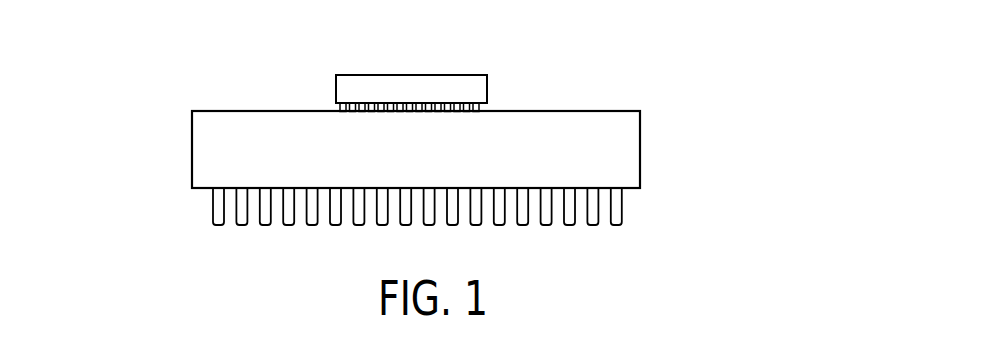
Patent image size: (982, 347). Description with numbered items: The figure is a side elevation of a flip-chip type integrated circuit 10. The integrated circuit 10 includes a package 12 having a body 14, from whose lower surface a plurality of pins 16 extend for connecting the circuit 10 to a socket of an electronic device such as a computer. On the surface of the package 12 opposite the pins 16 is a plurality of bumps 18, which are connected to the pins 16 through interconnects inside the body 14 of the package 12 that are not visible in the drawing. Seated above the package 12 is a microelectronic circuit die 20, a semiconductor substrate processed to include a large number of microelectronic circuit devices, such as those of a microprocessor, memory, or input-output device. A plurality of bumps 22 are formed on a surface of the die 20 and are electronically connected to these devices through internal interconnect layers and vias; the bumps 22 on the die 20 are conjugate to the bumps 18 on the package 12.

The integrated circuit 10 is at (166, 60).
The package 12 is at (664, 148).
The body 14 is at (192, 150).
The pins 16 is at (649, 209).
The bumps 18 is at (500, 101).
The microelectronic circuit die 20 is at (470, 75).
The bumps 22 is at (500, 101).